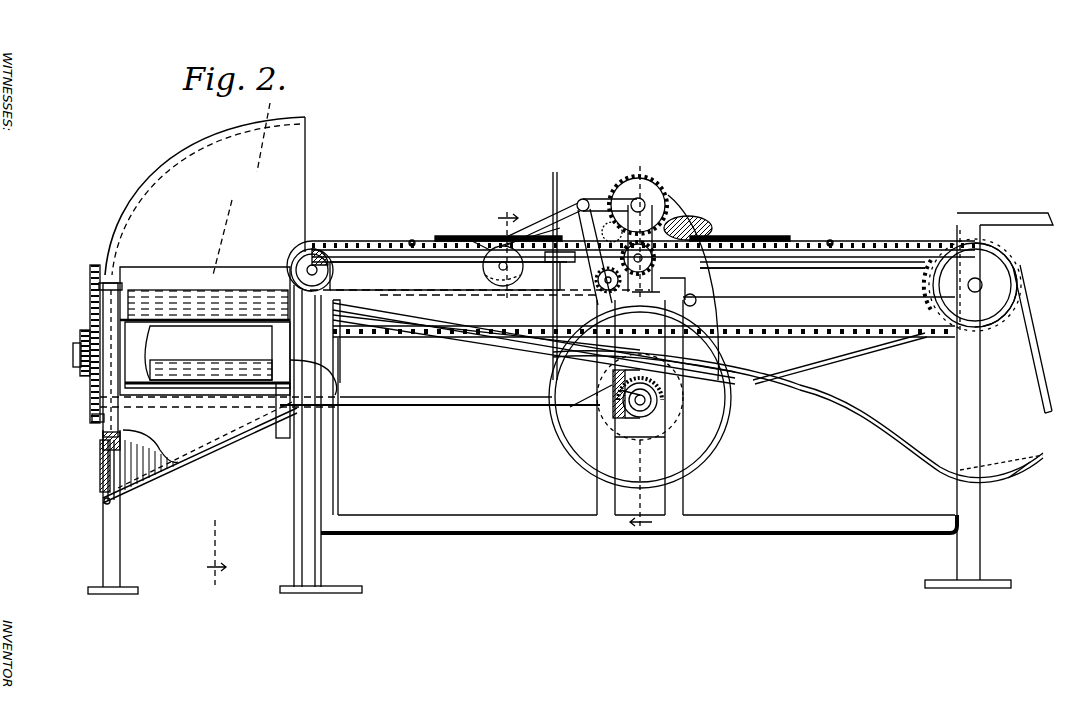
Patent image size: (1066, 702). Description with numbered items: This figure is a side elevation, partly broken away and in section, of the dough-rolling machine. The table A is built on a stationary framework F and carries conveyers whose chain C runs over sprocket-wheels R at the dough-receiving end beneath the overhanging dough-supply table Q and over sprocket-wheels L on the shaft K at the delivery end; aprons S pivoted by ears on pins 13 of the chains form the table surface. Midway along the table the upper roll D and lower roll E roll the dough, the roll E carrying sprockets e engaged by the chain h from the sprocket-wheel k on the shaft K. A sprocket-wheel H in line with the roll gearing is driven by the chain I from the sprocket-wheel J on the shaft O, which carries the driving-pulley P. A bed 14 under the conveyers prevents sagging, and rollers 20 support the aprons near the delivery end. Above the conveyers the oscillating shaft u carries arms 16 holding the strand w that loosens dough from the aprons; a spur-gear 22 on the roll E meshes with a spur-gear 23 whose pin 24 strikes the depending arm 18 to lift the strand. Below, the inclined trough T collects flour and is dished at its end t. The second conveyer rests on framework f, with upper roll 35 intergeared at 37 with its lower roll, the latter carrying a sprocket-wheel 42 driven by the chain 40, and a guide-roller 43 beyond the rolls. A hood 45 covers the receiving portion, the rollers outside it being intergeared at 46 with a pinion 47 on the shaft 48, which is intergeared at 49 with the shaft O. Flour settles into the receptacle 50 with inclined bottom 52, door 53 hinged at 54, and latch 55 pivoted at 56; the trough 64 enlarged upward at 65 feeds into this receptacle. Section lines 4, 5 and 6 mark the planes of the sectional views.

The section line 4 4 is at (240, 346).
The section line 5 5 is at (641, 351).
The section line 6 6 is at (506, 254).
The pins 13 is at (412, 240).
The bed 14 is at (785, 268).
The arms 16 is at (561, 200).
The arm 18 is at (609, 232).
The rollers 20 is at (500, 262).
The spur-gear 22 is at (690, 306).
The spur-gear 23 is at (600, 292).
The pin 24 is at (640, 276).
The upper roll 35 is at (157, 267).
The gearing 37 is at (106, 338).
The chain 40 is at (76, 343).
The sprocket-wheel 42 is at (80, 345).
The guide-roller 43 is at (345, 430).
The hood 45 is at (198, 146).
The gearing 46 is at (92, 312).
The pinion 47 is at (92, 418).
The shaft 48 is at (92, 400).
The gearing 49 is at (594, 410).
The receptacle 50 is at (202, 445).
The inclined bottom 52 is at (158, 476).
The door 53 is at (103, 488).
The hinge 54 is at (110, 503).
The latch 55 is at (103, 455).
The pivot 56 is at (100, 445).
The trough 64 is at (283, 438).
The enlargement 65 is at (232, 326).
The table A is at (781, 161).
The chain C is at (385, 256).
The upper roll D is at (665, 196).
The lower roll E is at (659, 291).
The framework F is at (915, 510).
The sprocket-wheel H is at (741, 326).
The chain I is at (792, 307).
The sprocket-wheel J is at (662, 384).
The shaft K is at (314, 250).
The sprocket-wheels L is at (343, 262).
The shaft O is at (660, 410).
The driving-pulley P is at (735, 347).
The dough-supply table Q is at (1000, 203).
The sprocket-wheels R is at (930, 298).
The aprons S is at (398, 241).
The trough T is at (492, 340).
The wiper W is at (475, 228).
The sprockets e is at (562, 260).
The framework f is at (103, 545).
The chain h is at (441, 272).
The sprocket-wheel k is at (409, 269).
The dish-shaped end t is at (1000, 480).
The oscillating shaft u is at (584, 198).
The strand w is at (523, 258).